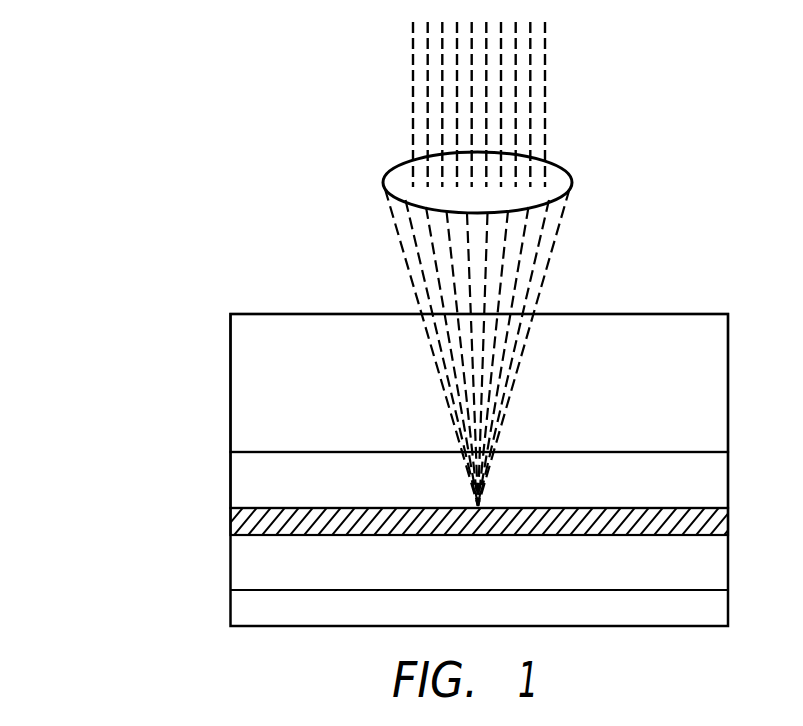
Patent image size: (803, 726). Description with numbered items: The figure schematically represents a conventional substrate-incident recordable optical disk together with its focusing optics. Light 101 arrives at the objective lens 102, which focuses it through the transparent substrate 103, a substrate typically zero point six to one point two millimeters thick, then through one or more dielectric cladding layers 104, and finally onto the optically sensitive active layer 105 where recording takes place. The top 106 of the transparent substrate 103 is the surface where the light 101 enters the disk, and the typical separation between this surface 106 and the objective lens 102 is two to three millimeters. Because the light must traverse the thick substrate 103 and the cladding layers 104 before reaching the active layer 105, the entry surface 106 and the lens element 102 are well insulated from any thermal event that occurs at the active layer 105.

The light 101 is at (407, 130).
The objective lens 102 is at (572, 181).
The transparent substrate 103 is at (633, 390).
The dielectric cladding layers 104 is at (229, 473).
The optically sensitive active layer 105 is at (230, 538).
The top of the transparent substrate 106 is at (288, 313).